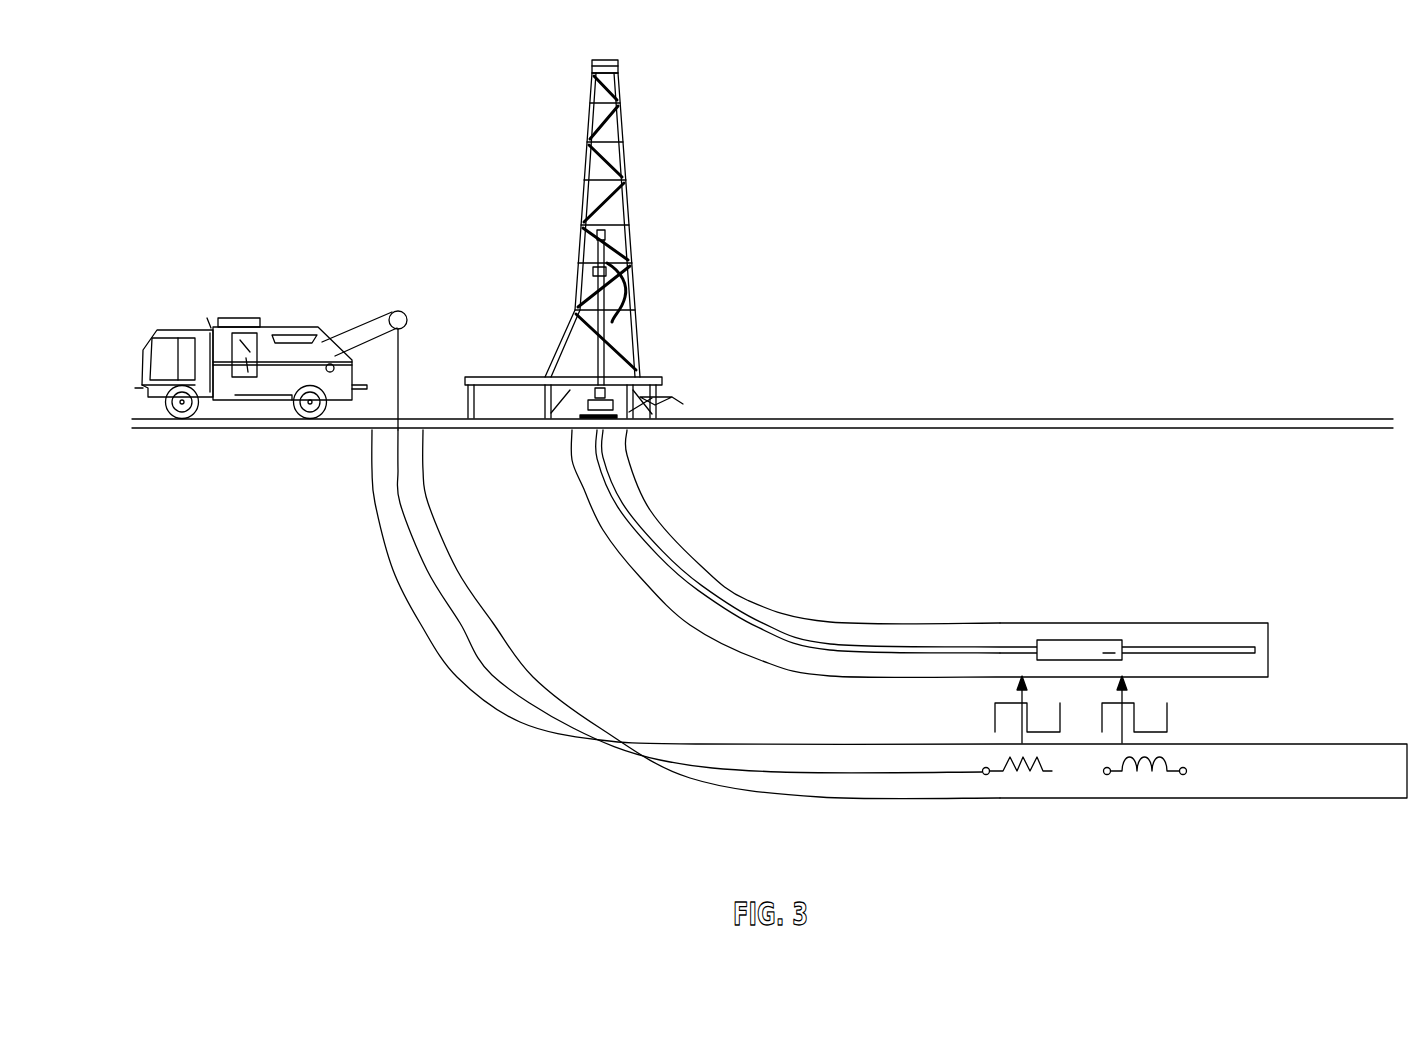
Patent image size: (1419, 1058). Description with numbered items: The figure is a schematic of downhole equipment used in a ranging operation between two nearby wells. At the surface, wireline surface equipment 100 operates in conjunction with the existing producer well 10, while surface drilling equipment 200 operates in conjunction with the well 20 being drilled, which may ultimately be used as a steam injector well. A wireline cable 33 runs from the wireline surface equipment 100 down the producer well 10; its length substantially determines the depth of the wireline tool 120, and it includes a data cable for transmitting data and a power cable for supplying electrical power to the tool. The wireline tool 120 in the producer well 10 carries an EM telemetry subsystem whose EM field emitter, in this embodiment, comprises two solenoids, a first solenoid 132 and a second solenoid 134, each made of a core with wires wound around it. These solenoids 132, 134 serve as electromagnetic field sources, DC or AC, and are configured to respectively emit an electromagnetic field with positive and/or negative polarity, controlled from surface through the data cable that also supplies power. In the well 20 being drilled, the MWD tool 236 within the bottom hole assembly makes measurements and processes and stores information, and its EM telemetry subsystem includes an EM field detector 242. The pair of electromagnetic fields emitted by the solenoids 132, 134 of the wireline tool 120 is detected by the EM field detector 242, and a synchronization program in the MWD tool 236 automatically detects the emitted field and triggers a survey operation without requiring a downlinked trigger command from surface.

The producer well 10 is at (375, 502).
The well being drilled 20 is at (653, 517).
The wireline cable 33 is at (490, 672).
The wireline surface equipment 100 is at (246, 318).
The wireline tool 120 is at (1187, 833).
The first solenoid 132 is at (1035, 768).
The second solenoid 134 is at (1132, 767).
The surface drilling equipment 200 is at (630, 203).
The MWD tool 236 is at (1085, 640).
The EM field detector 242 is at (1103, 653).